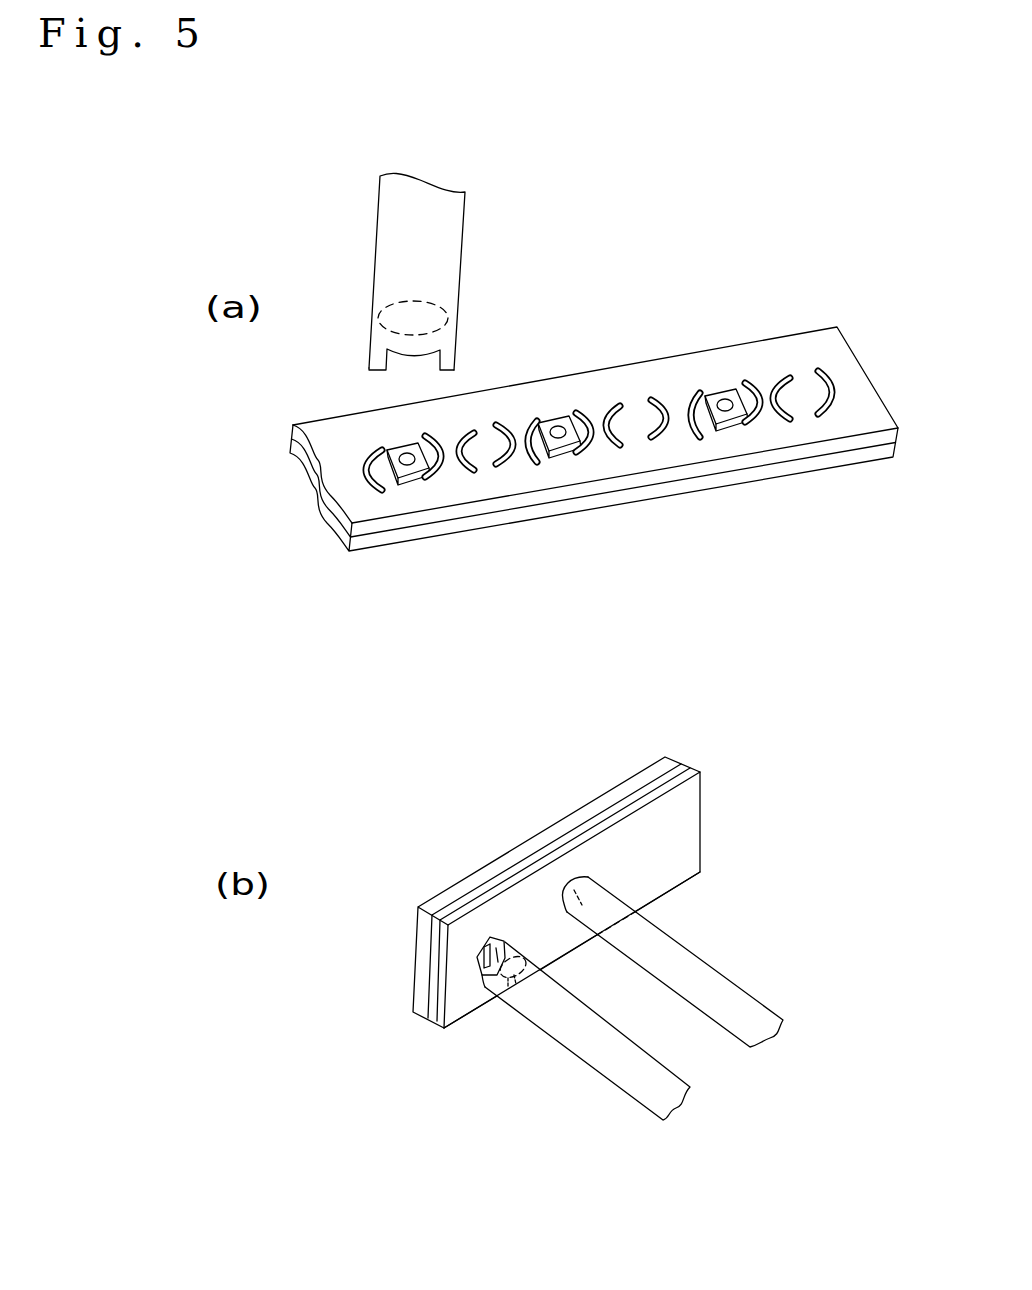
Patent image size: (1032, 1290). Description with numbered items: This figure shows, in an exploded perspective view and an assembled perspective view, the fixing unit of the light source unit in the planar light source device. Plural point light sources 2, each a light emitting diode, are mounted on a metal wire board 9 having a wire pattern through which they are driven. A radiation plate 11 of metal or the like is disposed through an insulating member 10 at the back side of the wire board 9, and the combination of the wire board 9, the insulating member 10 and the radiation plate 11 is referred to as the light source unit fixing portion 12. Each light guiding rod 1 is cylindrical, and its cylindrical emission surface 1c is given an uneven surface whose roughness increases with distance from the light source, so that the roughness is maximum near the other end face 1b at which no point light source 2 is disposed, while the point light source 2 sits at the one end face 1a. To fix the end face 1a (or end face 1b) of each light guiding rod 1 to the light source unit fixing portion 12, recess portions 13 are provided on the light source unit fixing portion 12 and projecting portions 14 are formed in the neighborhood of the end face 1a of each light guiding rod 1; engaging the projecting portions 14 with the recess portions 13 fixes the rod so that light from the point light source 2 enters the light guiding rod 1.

The light guiding rod 1 is at (537, 650).
The end face 1a is at (432, 317).
The end face 1b is at (590, 877).
The emission surface 1c is at (377, 250).
The point light source 2 is at (408, 465).
The wire board 9 is at (330, 447).
The insulating member 10 is at (327, 498).
The radiation plate 11 is at (342, 535).
The light source unit fixing portion 12 is at (573, 737).
The recess portion 13 is at (443, 467).
The projecting portion 14 is at (450, 352).